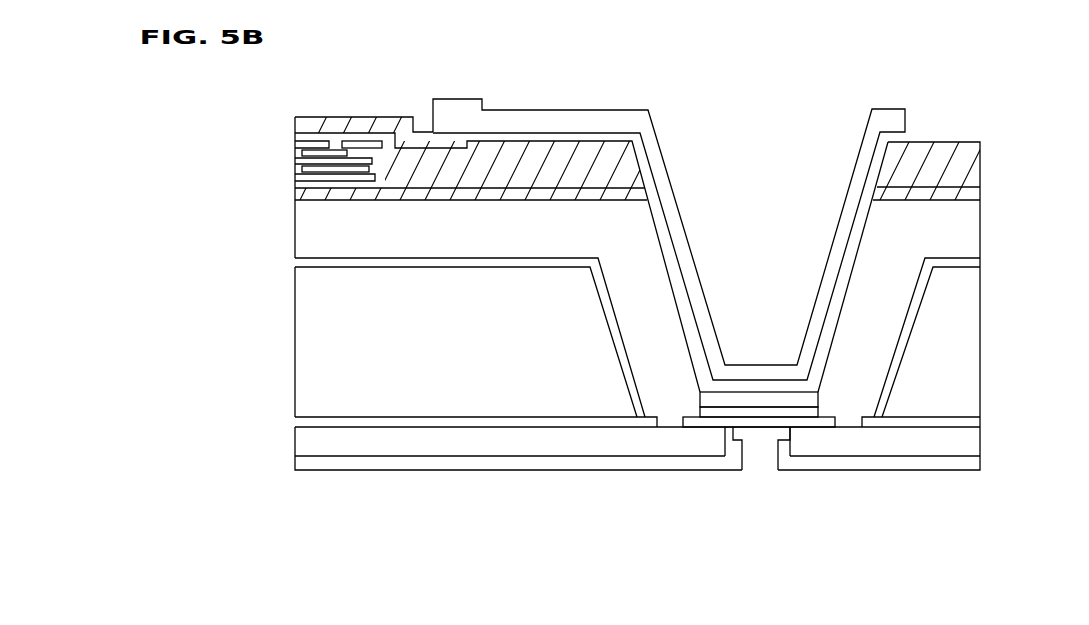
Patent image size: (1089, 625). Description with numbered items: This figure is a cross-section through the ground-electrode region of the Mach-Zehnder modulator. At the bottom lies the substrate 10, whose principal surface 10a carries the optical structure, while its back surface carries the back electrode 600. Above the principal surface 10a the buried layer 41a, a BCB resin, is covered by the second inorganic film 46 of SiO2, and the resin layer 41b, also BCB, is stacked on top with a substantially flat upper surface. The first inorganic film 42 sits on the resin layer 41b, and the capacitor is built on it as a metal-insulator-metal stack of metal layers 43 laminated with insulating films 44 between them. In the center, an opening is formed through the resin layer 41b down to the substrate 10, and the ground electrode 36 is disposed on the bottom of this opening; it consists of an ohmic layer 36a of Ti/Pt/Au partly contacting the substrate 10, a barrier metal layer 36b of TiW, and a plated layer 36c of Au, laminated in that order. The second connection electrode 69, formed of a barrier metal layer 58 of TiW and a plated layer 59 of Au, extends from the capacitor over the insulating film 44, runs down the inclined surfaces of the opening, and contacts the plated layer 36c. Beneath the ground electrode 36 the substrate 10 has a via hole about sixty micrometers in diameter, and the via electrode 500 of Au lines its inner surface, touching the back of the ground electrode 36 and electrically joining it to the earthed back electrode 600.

The substrate 10 is at (985, 441).
The principal surface 10a is at (915, 418).
The back electrode 600 is at (985, 464).
The ground electrode 36 is at (756, 485).
The ohmic layer 36a is at (692, 432).
The barrier metal layer 36b is at (752, 440).
The plated layer 36c is at (808, 469).
The buried layer 41a is at (960, 332).
The resin layer 41b is at (965, 237).
The first inorganic film 42 is at (647, 190).
The metal layers 43 is at (365, 117).
The insulating films 44 is at (328, 117).
The second inorganic film 46 is at (950, 264).
The barrier metal layer 58 is at (562, 118).
The plated layer 59 is at (609, 90).
The second connection electrode 69 is at (669, 195).
The via electrode 500 is at (737, 405).